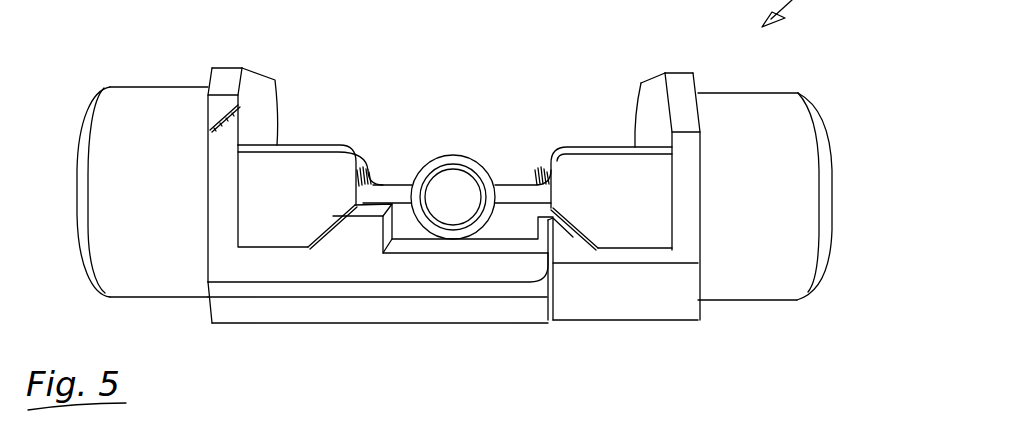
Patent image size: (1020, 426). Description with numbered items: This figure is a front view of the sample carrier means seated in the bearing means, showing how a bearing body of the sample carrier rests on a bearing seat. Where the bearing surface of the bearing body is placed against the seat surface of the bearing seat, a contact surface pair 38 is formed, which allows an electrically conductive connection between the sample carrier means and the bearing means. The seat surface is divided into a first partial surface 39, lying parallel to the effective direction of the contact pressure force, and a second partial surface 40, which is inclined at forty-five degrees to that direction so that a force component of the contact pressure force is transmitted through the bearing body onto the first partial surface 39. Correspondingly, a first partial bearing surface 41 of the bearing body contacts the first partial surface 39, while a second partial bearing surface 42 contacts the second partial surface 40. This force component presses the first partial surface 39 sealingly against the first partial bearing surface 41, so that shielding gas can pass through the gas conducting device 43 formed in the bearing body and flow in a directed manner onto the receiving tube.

The contact surface pair 38 is at (324, 250).
The first partial surface 39 is at (248, 212).
The second partial surface 40 is at (324, 236).
The first partial bearing surface 41 is at (682, 183).
The second partial bearing surface 42 is at (570, 242).
The gas conducting device 43 is at (522, 158).